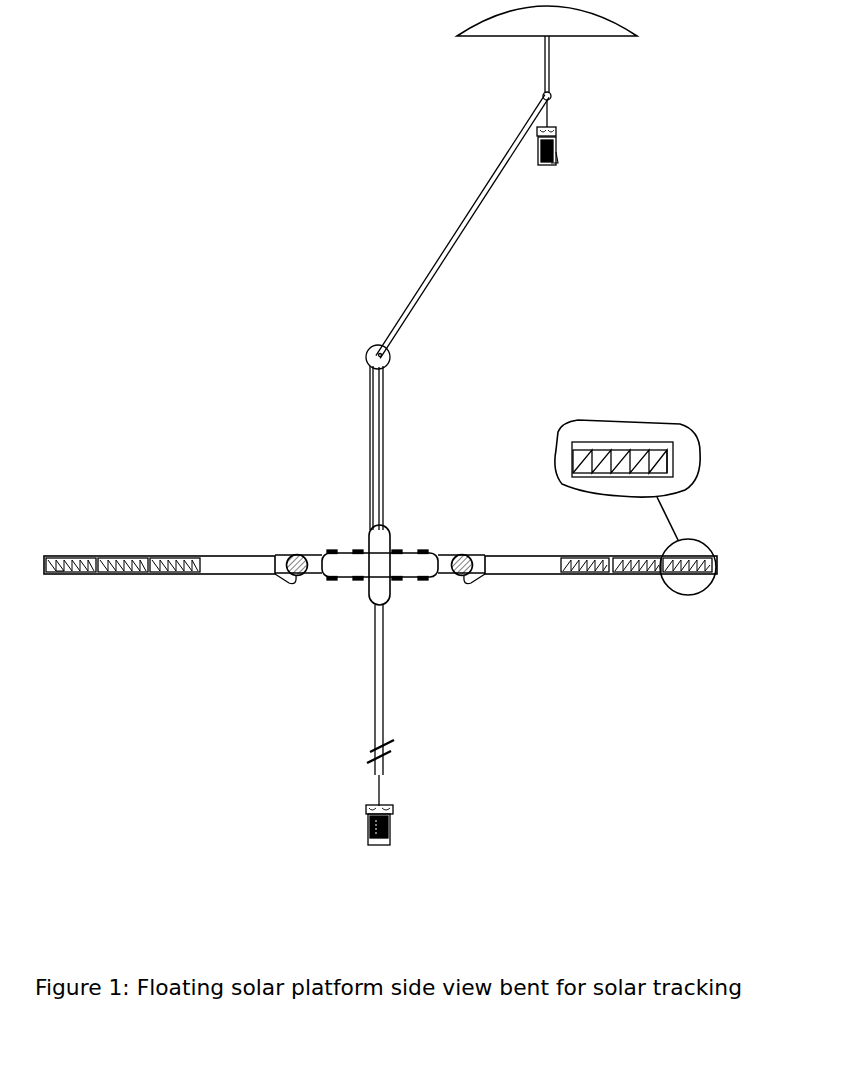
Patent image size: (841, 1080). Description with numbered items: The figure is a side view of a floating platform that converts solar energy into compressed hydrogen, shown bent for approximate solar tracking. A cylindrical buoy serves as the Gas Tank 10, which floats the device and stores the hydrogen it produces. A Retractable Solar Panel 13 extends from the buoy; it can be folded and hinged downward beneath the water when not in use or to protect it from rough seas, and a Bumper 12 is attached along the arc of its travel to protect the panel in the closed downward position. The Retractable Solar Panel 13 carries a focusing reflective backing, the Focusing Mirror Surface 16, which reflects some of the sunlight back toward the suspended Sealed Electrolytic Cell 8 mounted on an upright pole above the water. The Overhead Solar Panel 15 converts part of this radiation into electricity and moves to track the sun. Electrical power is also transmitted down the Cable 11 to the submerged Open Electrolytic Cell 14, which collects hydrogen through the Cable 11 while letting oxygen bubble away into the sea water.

The Sealed Electrolytic Cell 8 is at (551, 172).
The Gas Tank 10 is at (430, 580).
The Cable 11 is at (388, 650).
The Bumper 12 is at (290, 552).
The Retractable Solar Panel 13 is at (550, 578).
The Open Electrolytic Cell 14 is at (400, 812).
The Overhead Solar Panel 15 is at (480, 40).
The Focusing Mirror Surface 16 is at (584, 455).